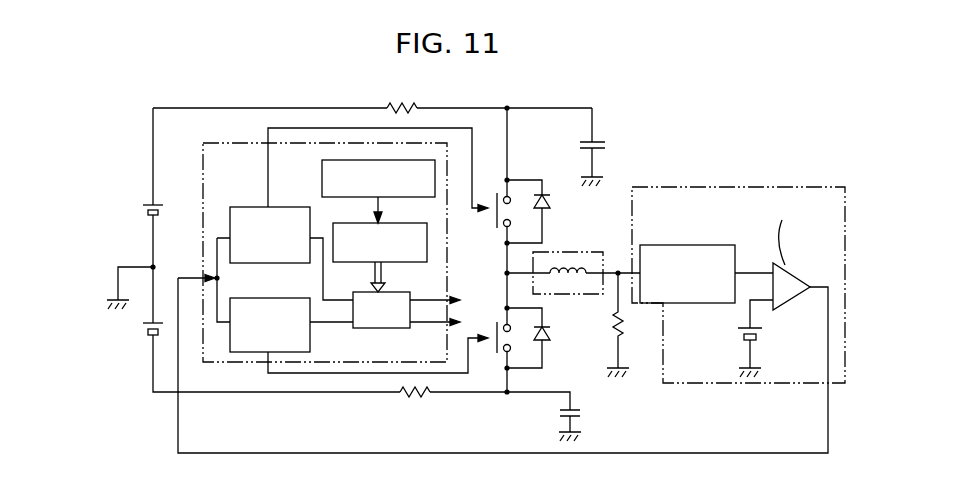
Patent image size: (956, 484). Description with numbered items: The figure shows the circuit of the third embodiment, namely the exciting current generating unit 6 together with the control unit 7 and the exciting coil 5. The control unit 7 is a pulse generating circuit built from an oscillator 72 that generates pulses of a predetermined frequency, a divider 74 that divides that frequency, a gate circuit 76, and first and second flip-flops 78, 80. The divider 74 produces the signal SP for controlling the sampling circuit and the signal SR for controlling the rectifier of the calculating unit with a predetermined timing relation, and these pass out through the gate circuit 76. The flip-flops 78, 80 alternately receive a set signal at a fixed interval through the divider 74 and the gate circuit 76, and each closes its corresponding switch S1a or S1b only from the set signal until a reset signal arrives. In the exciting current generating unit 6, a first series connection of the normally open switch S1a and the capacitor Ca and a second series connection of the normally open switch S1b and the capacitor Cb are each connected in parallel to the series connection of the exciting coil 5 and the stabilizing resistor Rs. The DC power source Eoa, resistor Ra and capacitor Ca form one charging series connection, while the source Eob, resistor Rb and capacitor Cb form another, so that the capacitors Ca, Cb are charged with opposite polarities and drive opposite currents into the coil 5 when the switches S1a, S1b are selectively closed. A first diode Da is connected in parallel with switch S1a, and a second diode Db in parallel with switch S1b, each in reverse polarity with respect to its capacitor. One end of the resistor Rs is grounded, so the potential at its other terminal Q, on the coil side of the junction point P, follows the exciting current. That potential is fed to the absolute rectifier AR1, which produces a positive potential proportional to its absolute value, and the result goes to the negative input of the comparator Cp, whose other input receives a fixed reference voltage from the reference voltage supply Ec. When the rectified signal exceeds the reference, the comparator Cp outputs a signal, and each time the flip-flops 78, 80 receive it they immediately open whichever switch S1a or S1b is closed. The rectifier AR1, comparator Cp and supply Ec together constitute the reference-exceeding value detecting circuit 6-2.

The control unit 7 is at (250, 143).
The oscillator 72 is at (322, 170).
The divider 74 is at (427, 252).
The gate circuit 76 is at (363, 328).
The first flip-flop 78 is at (242, 207).
The second flip-flop 80 is at (243, 352).
The exciting coil 5 is at (600, 252).
The exciting current generating unit 6 is at (693, 164).
The reference-exceeding value detecting circuit 6-2 is at (762, 185).
The DC power source Eoa is at (130, 205).
The DC power source Eob is at (135, 339).
The reference voltage supply Ec is at (764, 338).
The resistor Ra is at (402, 95).
The resistor Rb is at (412, 408).
The stabilizing resistor Rs is at (631, 325).
The first capacitor Ca is at (607, 147).
The second capacitor Cb is at (558, 416).
The first diode Da is at (543, 211).
The second diode Db is at (543, 338).
The first normally open switch S1a is at (494, 195).
The second normally open switch S1b is at (490, 358).
The signal SP is at (451, 302).
The signal SR' SR is at (451, 324).
The node P is at (495, 273).
The terminal Q is at (620, 266).
The absolute rectifier AR1 is at (703, 303).
The comparator Cp is at (798, 280).